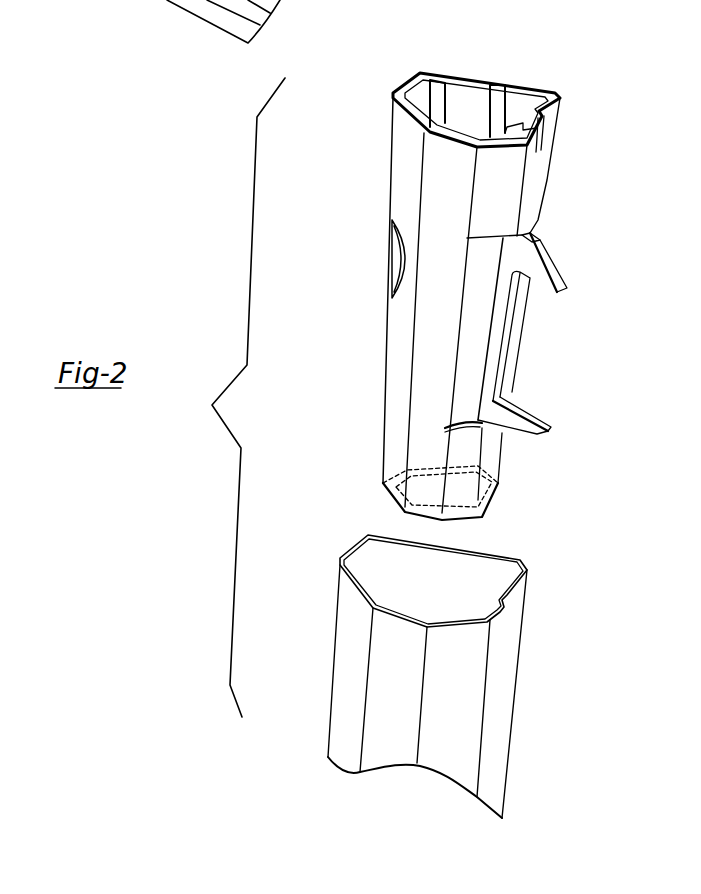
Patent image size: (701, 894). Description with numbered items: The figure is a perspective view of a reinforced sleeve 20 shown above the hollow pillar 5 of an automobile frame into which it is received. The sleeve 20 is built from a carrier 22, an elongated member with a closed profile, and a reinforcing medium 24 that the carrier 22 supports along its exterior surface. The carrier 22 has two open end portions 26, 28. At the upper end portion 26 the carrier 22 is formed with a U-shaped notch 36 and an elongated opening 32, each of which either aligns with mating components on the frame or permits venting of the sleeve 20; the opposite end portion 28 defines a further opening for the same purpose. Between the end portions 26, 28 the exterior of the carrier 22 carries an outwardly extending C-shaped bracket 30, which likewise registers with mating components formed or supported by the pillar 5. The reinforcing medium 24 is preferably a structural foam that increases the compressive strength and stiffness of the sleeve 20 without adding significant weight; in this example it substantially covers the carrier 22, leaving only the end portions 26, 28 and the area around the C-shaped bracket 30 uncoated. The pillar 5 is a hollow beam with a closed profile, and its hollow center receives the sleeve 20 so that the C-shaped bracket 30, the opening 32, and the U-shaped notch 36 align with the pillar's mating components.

The pillar 5 is at (513, 692).
The reinforced sleeve 20 is at (453, 280).
The carrier 22 is at (498, 86).
The reinforcing medium 24 is at (388, 433).
The end portion 26 is at (538, 90).
The end portion 28 is at (485, 500).
The C-shaped bracket 30 is at (563, 290).
The elongated opening 32 is at (390, 250).
The U-shaped notch 36 is at (543, 114).